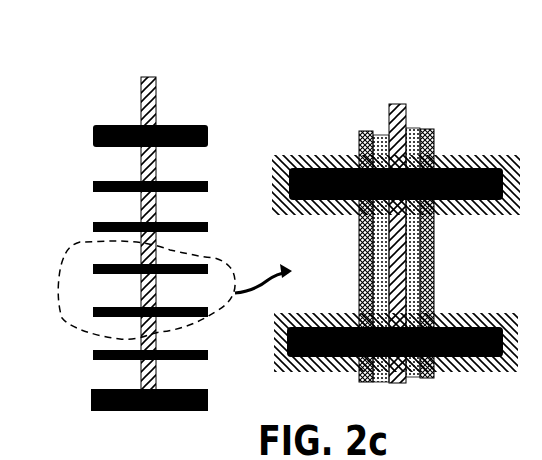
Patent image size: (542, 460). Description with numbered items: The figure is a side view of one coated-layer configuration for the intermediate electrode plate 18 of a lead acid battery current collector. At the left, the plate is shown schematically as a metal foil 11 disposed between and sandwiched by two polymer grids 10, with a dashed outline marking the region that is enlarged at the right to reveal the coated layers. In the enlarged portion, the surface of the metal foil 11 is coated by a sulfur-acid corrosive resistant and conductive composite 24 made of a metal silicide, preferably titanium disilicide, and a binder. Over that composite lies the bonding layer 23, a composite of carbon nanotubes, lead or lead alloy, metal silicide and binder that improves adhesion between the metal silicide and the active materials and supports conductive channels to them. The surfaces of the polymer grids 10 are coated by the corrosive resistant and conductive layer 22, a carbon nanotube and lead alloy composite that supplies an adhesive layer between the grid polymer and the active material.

The intermediate electrode plate 18 is at (100, 110).
The metal foil 11 is at (147, 77).
The polymer grid 10 is at (289, 178).
The corrosive resistant and conductive layer 22 is at (300, 155).
The bonding layer 23 is at (357, 148).
The sulfur-acid corrosive resistant and conductive composite 24 is at (380, 135).